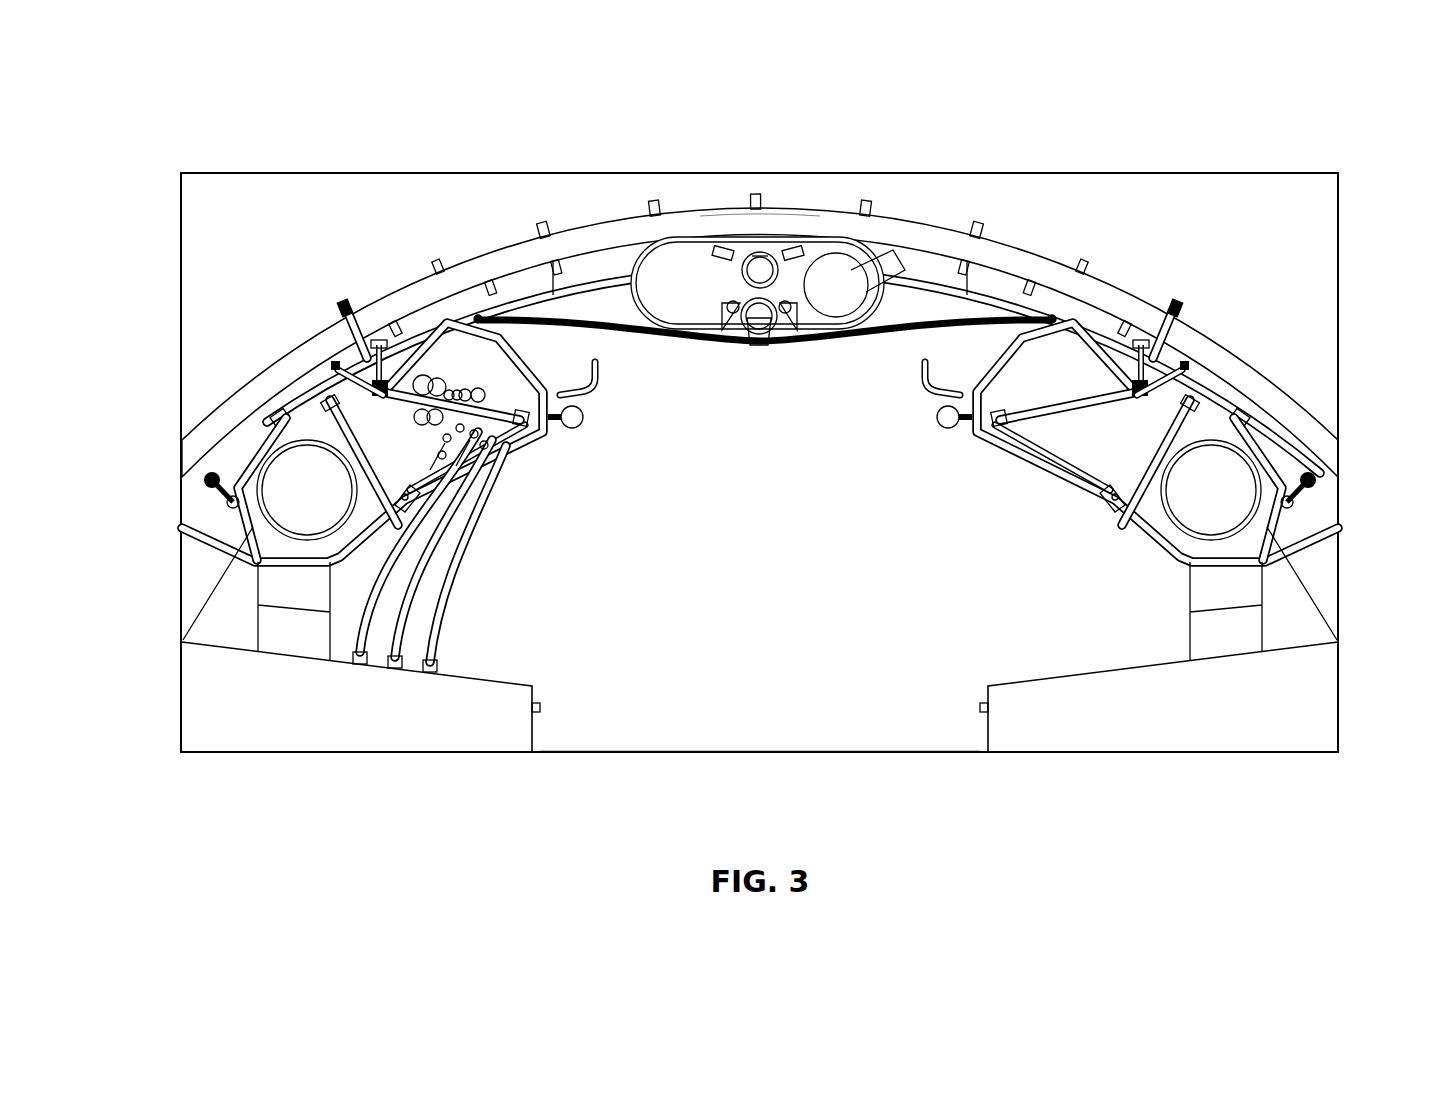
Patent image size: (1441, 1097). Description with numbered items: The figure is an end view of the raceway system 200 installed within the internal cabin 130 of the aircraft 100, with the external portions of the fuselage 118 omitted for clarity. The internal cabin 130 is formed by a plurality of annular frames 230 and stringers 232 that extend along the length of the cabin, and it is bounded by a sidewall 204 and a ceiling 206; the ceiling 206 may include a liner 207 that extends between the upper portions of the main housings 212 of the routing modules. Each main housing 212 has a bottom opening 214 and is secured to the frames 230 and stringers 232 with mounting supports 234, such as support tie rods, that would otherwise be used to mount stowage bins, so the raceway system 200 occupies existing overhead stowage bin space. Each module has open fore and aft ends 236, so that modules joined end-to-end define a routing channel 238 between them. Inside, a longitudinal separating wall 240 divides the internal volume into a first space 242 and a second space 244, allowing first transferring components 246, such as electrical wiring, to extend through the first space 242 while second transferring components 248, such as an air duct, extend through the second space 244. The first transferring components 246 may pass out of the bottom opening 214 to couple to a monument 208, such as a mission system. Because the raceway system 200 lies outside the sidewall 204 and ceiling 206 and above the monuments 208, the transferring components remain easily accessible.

The aircraft 100 is at (1215, 268).
The fuselage 118 is at (1312, 398).
The internal cabin 130 is at (655, 735).
The raceway system 200 is at (562, 437).
The sidewall 204 is at (185, 468).
The ceiling 206 is at (810, 348).
The liner 207 is at (728, 348).
The monument 208 is at (300, 738).
The main housing 212 is at (537, 365).
The bottom opening 214 is at (437, 525).
The annular frame 230 is at (828, 208).
The stringer 232 is at (545, 226).
The mounting support 234 is at (352, 345).
The open fore and aft ends 236 is at (503, 440).
The routing channel 238 is at (515, 402).
The longitudinal separating wall 240 is at (378, 375).
The first space 242 is at (487, 372).
The second space 244 is at (262, 518).
The first transferring components 246 is at (468, 505).
The second transferring components 248 is at (330, 548).